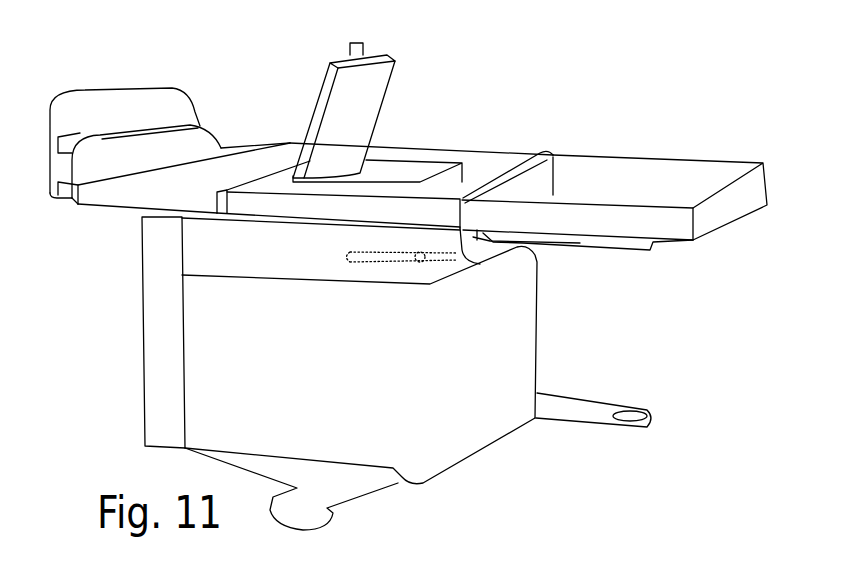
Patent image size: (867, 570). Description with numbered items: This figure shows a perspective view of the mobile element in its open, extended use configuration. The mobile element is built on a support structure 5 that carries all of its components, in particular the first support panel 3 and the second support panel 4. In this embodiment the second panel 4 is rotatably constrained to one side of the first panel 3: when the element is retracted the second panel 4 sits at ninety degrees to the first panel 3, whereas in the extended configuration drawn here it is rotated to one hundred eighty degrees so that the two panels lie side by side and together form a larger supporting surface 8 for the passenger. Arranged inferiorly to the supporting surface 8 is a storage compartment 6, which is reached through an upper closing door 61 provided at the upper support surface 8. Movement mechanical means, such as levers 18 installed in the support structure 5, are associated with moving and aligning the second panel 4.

The first support panel 3 is at (498, 162).
The second support panel 4 is at (698, 188).
The support structure 5 is at (207, 383).
The storage compartment 6 is at (404, 170).
The supporting surface 8 is at (527, 160).
The levers 18 is at (410, 260).
The upper closing door 61 is at (365, 83).